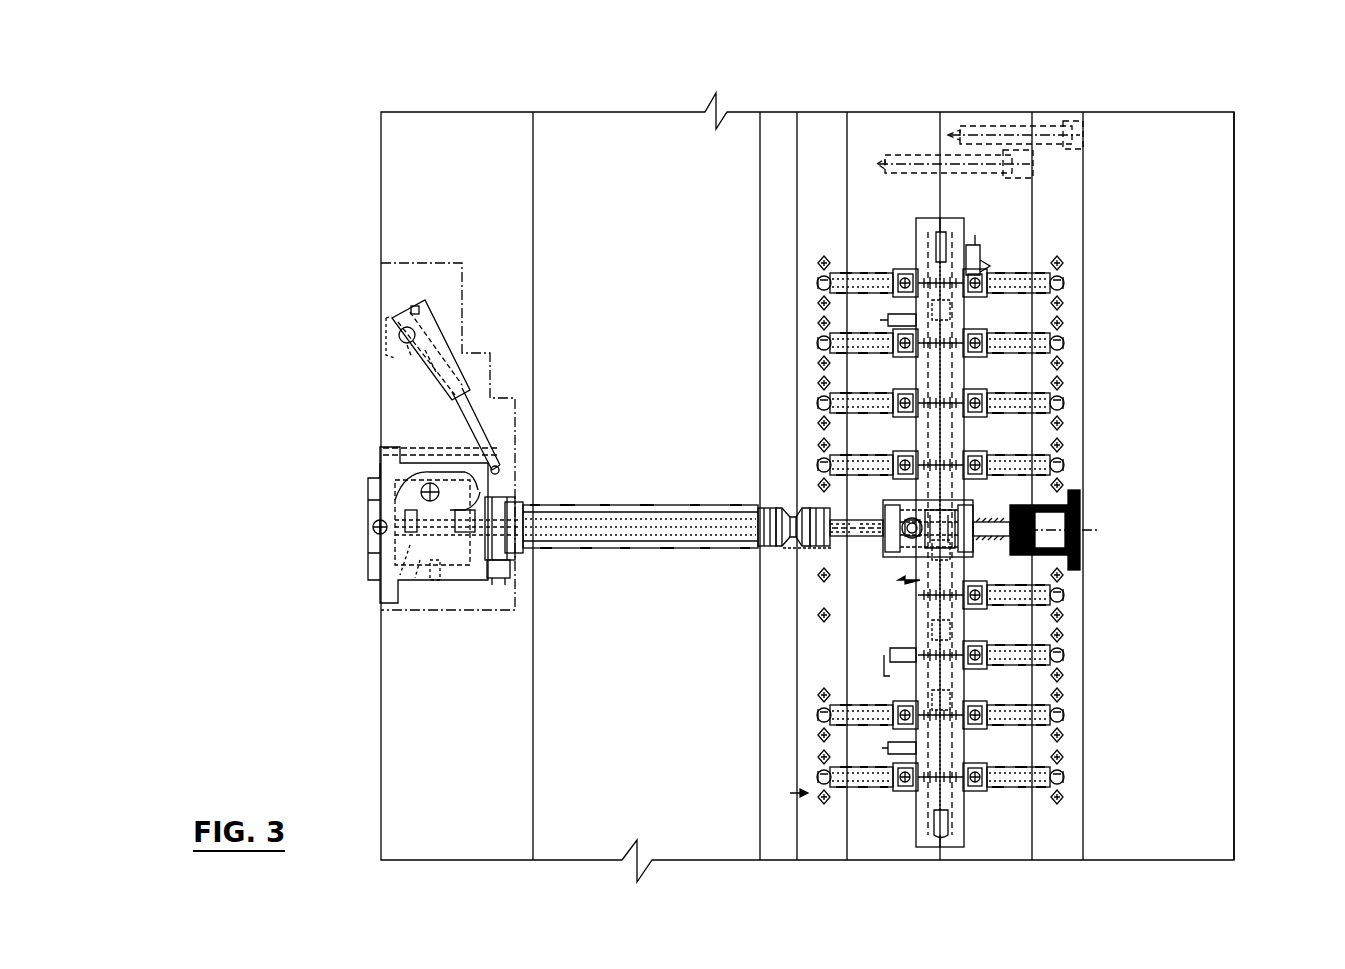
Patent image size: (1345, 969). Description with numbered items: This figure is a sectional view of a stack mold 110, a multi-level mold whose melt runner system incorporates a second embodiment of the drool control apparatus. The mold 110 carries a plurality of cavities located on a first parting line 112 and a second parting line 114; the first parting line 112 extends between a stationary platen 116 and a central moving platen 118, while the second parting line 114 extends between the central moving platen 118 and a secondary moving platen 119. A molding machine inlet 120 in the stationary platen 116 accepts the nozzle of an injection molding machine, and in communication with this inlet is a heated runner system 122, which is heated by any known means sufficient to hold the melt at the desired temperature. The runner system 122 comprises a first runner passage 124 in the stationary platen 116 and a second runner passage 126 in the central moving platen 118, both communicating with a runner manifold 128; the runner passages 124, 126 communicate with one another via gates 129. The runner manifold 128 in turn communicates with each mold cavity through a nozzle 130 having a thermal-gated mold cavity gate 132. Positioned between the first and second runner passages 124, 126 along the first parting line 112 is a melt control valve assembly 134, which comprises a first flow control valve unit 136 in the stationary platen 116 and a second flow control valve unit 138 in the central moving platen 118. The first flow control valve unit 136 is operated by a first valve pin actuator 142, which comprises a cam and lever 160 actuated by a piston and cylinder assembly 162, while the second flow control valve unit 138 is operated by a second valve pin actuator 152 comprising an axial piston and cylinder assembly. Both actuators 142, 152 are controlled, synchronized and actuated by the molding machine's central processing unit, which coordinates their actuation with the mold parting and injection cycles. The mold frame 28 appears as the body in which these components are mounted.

The stack mold 110 is at (1120, 128).
The first parting line 112 is at (800, 105).
The second parting line 114 is at (1084, 105).
The stationary platen 116 is at (651, 105).
The central moving platen 118 is at (891, 107).
The secondary moving platen 119 is at (1243, 357).
The molding machine inlet 120 is at (372, 522).
The heated runner system 122 is at (631, 512).
The first runner passage 124 is at (680, 505).
The second runner passage 126 is at (862, 557).
The runner manifold 128 is at (945, 702).
The gates 129 is at (800, 566).
The nozzle 130 is at (1010, 265).
The thermal-gated mold cavity gate 132 is at (1065, 780).
The melt control valve assembly 134 is at (783, 552).
The first flow control valve unit 136 is at (808, 495).
The second flow control valve unit 138 is at (778, 495).
The first valve pin actuator 142 is at (403, 425).
The second valve pin actuator 152 is at (1060, 497).
The cam and lever 160 is at (423, 440).
The piston and cylinder assembly 162 is at (440, 330).
The mold frame 28 is at (1025, 532).